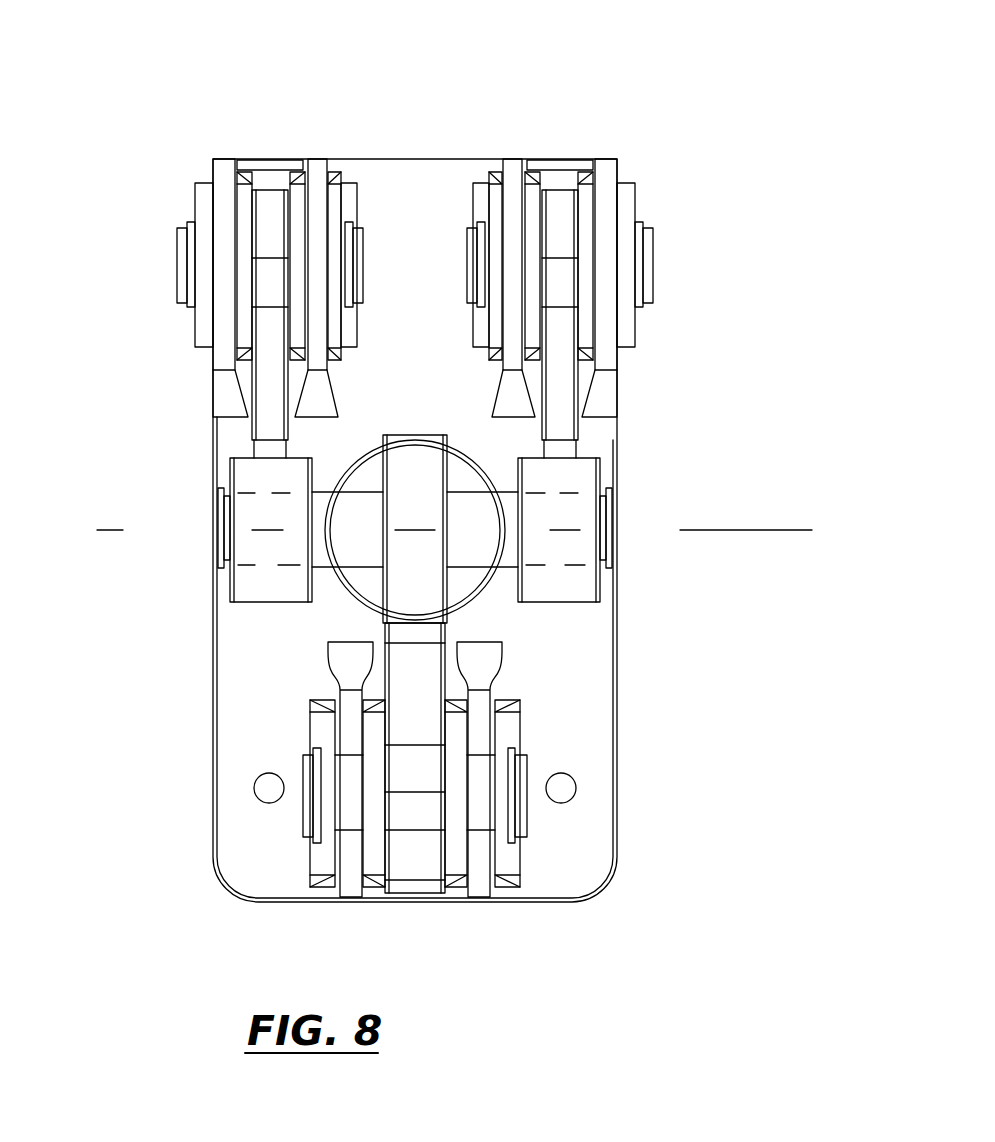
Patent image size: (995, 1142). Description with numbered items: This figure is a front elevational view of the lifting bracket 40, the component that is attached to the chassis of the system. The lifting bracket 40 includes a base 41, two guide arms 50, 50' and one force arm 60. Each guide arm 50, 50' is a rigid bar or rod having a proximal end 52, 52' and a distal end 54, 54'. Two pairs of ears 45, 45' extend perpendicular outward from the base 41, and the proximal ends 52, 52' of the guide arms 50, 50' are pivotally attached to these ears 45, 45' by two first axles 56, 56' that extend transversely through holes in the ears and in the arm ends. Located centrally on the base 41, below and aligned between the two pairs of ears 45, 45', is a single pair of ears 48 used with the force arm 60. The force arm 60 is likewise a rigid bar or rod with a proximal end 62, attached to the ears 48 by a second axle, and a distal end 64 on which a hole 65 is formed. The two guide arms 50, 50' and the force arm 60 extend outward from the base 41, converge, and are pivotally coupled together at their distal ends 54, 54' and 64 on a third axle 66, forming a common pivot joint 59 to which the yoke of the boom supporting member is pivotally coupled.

The lifting bracket 40 is at (262, 95).
The base 41 is at (603, 260).
The ear 45 is at (262, 232).
The ear 45' is at (540, 228).
The proximal end 52 is at (199, 296).
The proximal end 52' is at (649, 289).
The first axle 56 is at (224, 253).
The first axle 56' is at (614, 254).
The guide arm 50 is at (249, 428).
The guide arm 50' is at (604, 288).
The distal end 54 is at (221, 637).
The distal end 54' is at (609, 630).
The third axle 66 is at (216, 515).
The distal end 64 is at (412, 452).
The hole 65 is at (455, 487).
The force arm 60 is at (445, 622).
The ear 48 is at (342, 650).
The proximal end 62 is at (430, 875).
The common pivot joint 59 is at (728, 530).